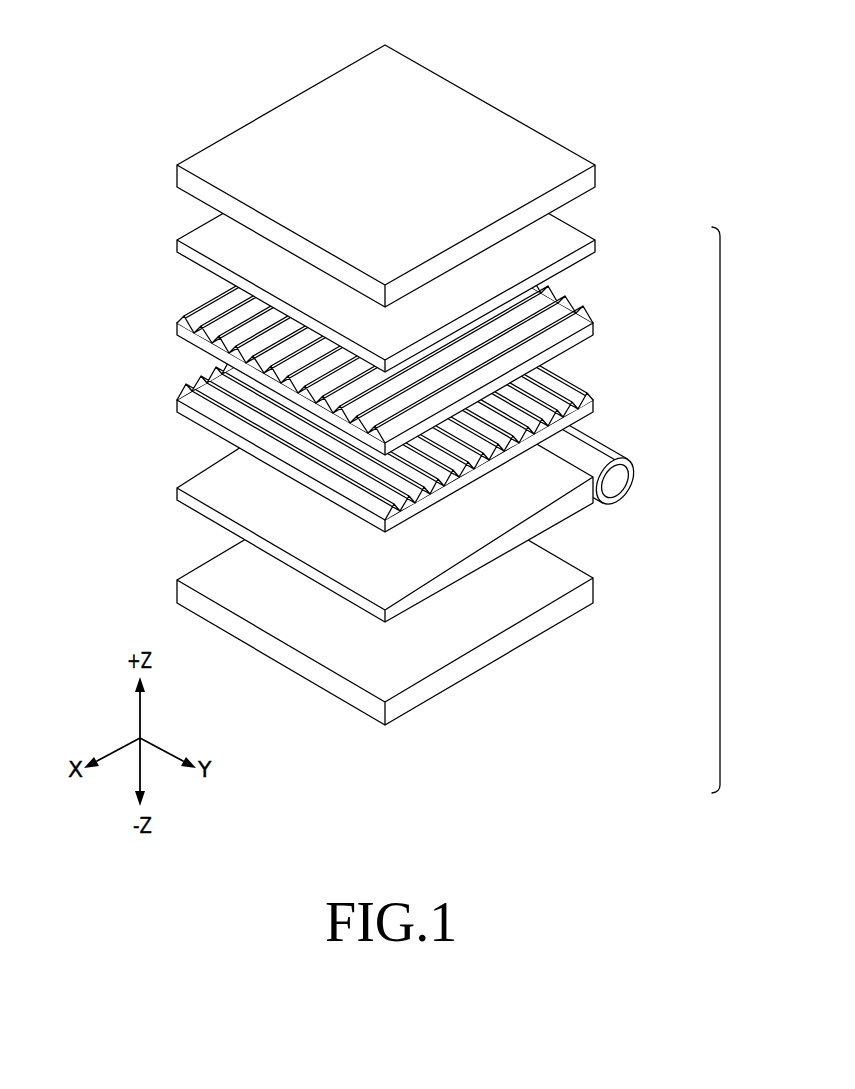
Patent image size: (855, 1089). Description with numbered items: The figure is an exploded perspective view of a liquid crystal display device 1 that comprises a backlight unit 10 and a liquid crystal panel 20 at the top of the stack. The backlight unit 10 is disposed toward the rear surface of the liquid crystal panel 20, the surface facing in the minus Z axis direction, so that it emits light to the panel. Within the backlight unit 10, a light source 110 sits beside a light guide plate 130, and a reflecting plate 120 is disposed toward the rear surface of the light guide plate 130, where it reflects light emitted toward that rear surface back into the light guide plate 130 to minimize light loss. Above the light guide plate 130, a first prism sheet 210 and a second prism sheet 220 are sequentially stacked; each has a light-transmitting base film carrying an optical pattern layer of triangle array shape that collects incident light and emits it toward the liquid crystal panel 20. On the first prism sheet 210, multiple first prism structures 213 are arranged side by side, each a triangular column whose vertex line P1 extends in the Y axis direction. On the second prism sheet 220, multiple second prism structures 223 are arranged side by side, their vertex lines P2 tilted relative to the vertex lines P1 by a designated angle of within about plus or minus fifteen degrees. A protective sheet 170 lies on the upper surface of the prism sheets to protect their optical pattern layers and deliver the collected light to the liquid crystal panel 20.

The liquid crystal display device 1 is at (603, 40).
The backlight unit 10 is at (733, 510).
The liquid crystal panel 20 is at (596, 176).
The light source 110 is at (618, 481).
The reflecting plate 120 is at (538, 625).
The light guide plate 130 is at (558, 510).
The protective sheet 170 is at (596, 241).
The first prism sheet 210 is at (595, 402).
The first prism structures 213 is at (186, 393).
The second prism sheet 220 is at (594, 335).
The second prism structures 223 is at (594, 322).
The vertex line of first prism structure P1 is at (200, 394).
The vertex line of second prism structure P2 is at (581, 306).